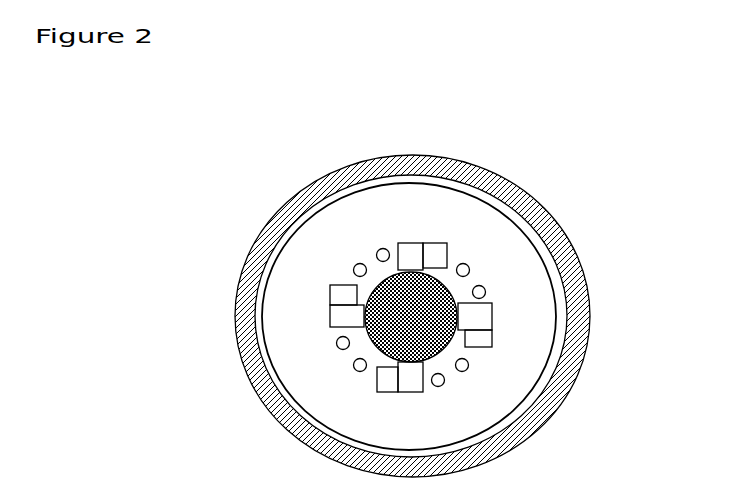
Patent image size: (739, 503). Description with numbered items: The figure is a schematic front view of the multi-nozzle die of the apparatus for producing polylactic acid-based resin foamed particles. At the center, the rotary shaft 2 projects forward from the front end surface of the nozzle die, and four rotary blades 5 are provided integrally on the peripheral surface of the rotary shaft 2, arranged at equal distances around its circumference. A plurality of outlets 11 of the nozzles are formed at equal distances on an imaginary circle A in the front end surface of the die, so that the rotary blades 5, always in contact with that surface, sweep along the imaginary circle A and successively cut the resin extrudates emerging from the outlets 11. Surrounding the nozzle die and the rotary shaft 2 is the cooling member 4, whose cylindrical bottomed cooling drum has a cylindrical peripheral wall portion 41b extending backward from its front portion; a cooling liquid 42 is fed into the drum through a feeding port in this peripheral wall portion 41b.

The rotary shaft 2 is at (432, 349).
The cooling member 4 is at (392, 148).
The cooling liquid 42 is at (490, 175).
The peripheral wall portion 41b is at (556, 228).
The rotary blades 5 is at (447, 252).
The outlets 11 is at (471, 271).
The imaginary circle A is at (348, 283).